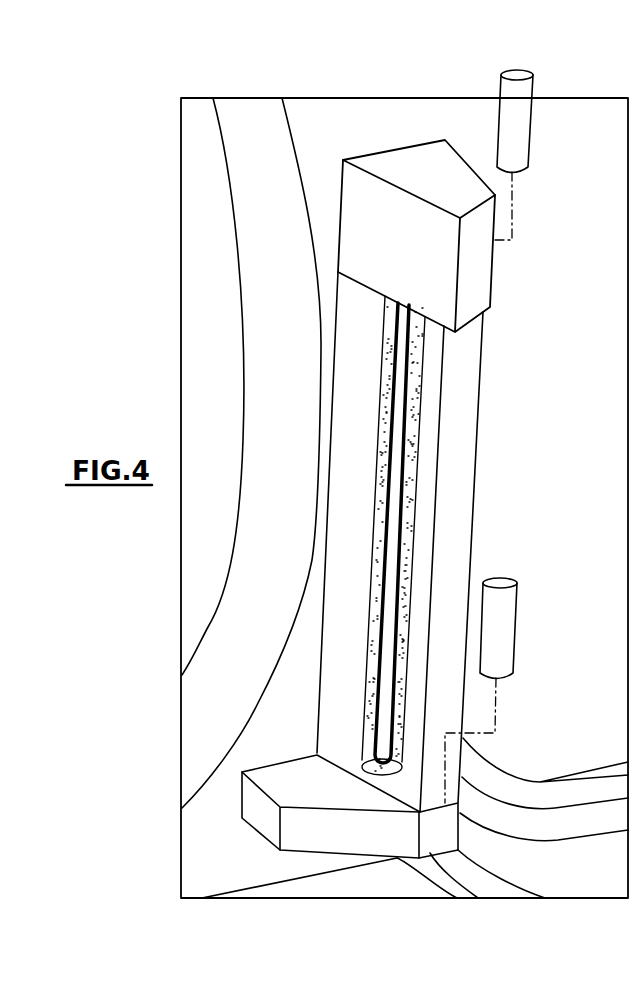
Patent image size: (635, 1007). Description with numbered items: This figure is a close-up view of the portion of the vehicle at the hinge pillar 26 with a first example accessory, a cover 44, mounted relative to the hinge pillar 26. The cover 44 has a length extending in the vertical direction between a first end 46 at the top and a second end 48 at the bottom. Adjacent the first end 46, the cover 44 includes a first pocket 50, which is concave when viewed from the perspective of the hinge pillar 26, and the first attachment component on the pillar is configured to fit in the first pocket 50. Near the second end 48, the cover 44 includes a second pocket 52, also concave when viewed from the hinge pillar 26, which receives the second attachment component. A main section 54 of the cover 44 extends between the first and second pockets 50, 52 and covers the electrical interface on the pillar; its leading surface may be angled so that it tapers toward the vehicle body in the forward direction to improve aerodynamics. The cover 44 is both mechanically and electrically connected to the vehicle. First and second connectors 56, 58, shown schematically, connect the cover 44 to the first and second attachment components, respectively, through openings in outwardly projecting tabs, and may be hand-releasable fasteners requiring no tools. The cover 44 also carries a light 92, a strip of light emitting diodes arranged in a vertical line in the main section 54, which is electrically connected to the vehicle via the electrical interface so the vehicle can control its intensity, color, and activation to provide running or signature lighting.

The hinge pillar 26 is at (327, 193).
The cover 44 is at (410, 498).
The first end 46 is at (432, 160).
The second end 48 is at (353, 857).
The first pocket 50 is at (427, 263).
The second pocket 52 is at (335, 828).
The main section 54 is at (460, 453).
The first connector 56 is at (528, 90).
The second connector 58 is at (497, 627).
The light 92 is at (420, 377).